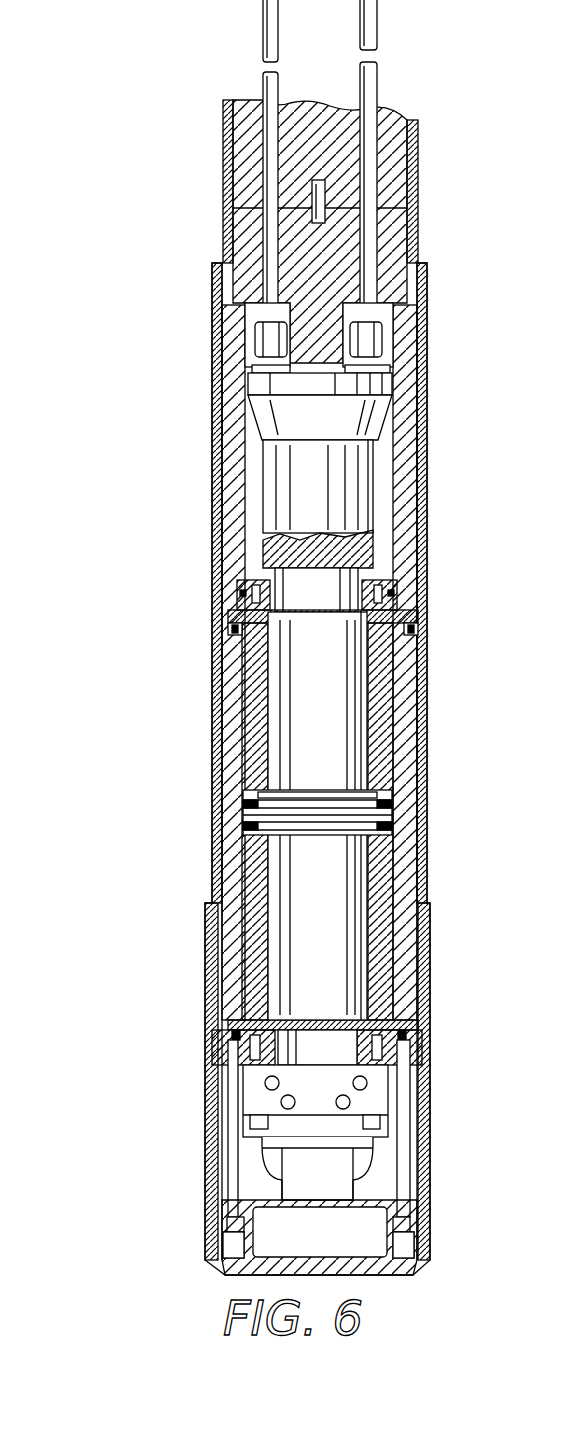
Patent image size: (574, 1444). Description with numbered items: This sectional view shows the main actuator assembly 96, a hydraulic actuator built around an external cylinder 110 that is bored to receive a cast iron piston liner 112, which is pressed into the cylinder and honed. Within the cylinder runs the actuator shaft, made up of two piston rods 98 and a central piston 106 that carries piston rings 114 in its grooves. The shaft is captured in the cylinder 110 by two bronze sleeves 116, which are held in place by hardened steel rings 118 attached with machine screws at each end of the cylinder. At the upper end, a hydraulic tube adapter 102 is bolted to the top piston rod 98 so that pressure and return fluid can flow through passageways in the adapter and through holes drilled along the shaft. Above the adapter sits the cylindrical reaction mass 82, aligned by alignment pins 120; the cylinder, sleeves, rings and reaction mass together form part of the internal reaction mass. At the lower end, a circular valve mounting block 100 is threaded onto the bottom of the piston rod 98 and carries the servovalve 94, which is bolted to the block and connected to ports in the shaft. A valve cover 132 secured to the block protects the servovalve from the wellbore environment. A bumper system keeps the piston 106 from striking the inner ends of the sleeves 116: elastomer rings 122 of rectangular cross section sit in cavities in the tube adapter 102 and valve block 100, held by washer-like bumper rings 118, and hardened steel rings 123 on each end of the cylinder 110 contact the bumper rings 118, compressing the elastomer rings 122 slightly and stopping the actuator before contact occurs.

The cylindrical reaction mass 82 is at (392, 122).
The alignment pins 120 is at (327, 192).
The hydraulic tube adapter 102 is at (266, 493).
The elastomer rings 122 is at (250, 590).
The hardened steel rings 118 is at (222, 628).
The hardened steel rings 123 is at (416, 626).
The actuator piston rod 98 is at (288, 713).
The central piston 106 is at (323, 793).
The piston liner 112 is at (400, 797).
The piston rings 114 is at (258, 822).
The bronze sleeves 116 is at (383, 885).
The external cylinder 110 is at (232, 873).
The main actuator assembly 96 is at (126, 868).
The valve mounting block 100 is at (213, 1037).
The servovalve 94 is at (247, 1130).
The valve cover 132 is at (213, 1243).